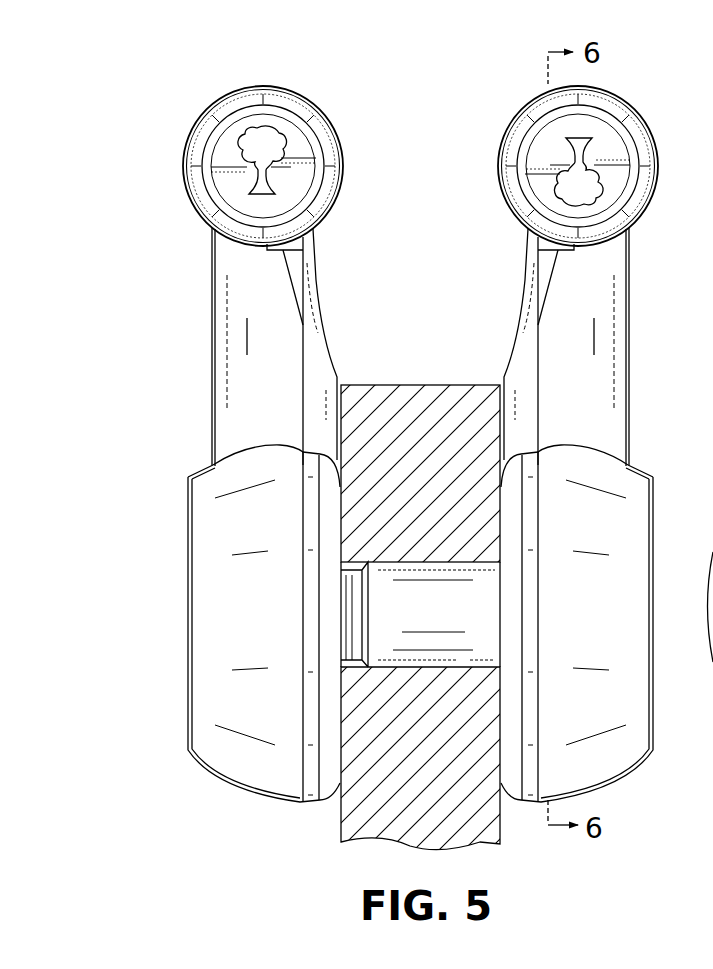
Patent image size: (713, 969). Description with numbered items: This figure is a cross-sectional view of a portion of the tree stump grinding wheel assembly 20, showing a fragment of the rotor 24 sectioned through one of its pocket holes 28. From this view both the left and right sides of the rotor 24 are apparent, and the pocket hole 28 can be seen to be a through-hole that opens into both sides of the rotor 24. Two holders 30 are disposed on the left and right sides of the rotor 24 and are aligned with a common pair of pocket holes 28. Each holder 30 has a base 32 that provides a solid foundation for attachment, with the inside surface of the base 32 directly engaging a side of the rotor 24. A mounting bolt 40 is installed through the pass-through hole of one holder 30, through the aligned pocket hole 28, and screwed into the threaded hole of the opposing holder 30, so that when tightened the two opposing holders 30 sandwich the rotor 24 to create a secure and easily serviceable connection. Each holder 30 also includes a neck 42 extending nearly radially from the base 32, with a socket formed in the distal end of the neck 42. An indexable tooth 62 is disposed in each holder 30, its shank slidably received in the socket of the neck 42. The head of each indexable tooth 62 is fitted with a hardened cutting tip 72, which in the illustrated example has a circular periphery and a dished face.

The tree stump grinding wheel assembly 20 is at (438, 96).
The rotor 24 is at (408, 382).
The pocket hole 28 is at (463, 664).
The holder 30 is at (187, 472).
The base 32 is at (208, 699).
The mounting bolt 40 is at (439, 619).
The neck 42 is at (212, 292).
The indexable tooth 62 is at (200, 104).
The cutting tip 72 is at (198, 199).